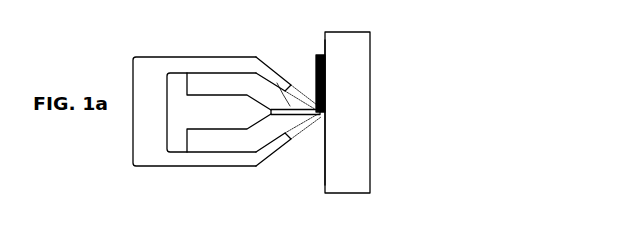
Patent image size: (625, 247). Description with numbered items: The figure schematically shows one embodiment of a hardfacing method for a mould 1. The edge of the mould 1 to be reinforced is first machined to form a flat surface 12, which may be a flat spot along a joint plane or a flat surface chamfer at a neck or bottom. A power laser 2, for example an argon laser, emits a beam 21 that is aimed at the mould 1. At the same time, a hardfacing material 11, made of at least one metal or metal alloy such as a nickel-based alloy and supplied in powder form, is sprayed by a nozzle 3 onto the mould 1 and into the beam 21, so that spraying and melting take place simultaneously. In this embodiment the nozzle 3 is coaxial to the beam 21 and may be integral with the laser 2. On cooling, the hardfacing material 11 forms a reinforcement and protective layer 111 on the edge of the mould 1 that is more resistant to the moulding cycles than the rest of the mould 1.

The mould 1 is at (377, 112).
The hardfacing material 11 is at (308, 125).
The reinforcement and protective layer 111 is at (323, 55).
The flat surface 12 is at (316, 165).
The power laser 2 is at (221, 98).
The beam 21 is at (263, 65).
The nozzle 3 is at (234, 167).